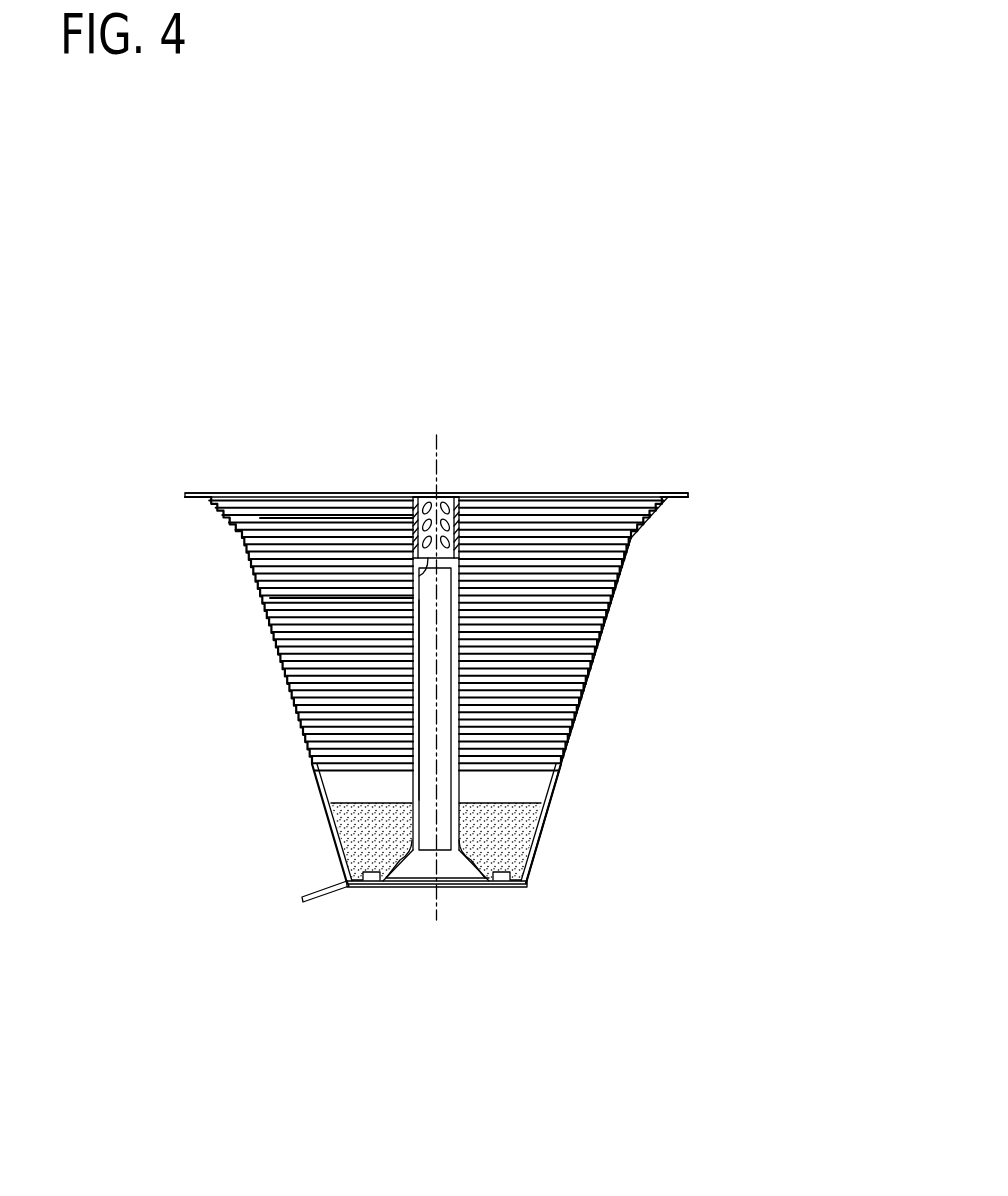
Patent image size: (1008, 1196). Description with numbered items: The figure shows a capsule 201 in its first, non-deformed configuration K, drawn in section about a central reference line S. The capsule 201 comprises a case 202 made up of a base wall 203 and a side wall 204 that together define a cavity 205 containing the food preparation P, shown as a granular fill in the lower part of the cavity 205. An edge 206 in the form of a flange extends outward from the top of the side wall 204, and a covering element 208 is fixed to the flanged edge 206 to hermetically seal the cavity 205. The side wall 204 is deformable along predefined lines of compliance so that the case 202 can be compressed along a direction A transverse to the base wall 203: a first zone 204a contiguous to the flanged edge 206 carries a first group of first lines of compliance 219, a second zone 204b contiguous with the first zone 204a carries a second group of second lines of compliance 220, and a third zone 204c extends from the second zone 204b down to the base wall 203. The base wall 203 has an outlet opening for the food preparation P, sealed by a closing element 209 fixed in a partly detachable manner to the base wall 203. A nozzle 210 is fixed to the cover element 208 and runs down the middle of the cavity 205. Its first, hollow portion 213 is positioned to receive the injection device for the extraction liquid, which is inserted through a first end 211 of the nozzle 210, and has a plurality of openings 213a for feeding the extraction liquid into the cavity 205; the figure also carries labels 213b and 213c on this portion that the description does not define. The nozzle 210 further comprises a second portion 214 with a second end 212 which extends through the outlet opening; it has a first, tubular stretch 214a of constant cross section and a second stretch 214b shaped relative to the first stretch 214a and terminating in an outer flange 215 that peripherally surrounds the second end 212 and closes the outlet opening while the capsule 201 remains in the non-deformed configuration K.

The capsule 201 is at (238, 462).
The case 202 is at (700, 633).
The base wall 203 is at (523, 887).
The side wall 204 is at (618, 600).
The first zone 204a is at (660, 515).
The second zone 204b is at (602, 648).
The third zone 204c is at (550, 812).
The cavity 205 is at (490, 790).
The flanged edge 206 is at (197, 500).
The covering element 208 is at (667, 493).
The closing element 209 is at (475, 888).
The nozzle 210 is at (397, 663).
The first end 211 is at (431, 488).
The second end 212 is at (403, 875).
The first hollow portion 213 is at (467, 538).
The openings 213a is at (452, 493).
The valve seat 213b is at (425, 567).
The valve top face 213c is at (422, 493).
The second portion 214 is at (410, 735).
The first tubular stretch 214a is at (412, 697).
The second stretch 214b is at (408, 850).
The outer flange 215 is at (377, 873).
The first lines of compliance 219 is at (320, 518).
The second lines of compliance 220 is at (330, 598).
The food preparation P is at (513, 803).
The central axis S is at (433, 903).
The first non-deformed configuration K is at (182, 837).
The direction A is at (862, 593).